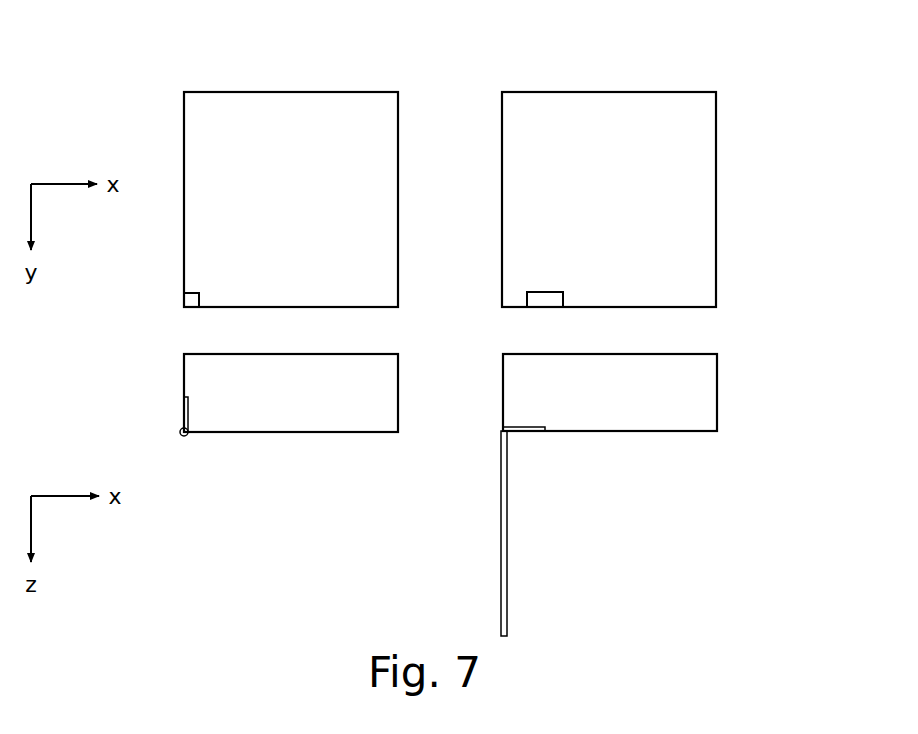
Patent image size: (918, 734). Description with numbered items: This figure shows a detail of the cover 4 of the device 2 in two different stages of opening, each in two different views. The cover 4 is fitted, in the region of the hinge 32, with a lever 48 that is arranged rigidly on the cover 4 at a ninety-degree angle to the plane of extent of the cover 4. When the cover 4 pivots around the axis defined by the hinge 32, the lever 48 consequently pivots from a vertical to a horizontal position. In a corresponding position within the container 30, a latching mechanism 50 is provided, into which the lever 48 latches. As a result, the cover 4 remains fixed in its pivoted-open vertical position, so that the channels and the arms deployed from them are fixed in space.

The device 2 is at (237, 75).
The container 30 is at (335, 108).
The cover 4 is at (315, 307).
The latching mechanism 50 is at (556, 287).
The lever 48 is at (190, 413).
The hinge 32 is at (178, 430).